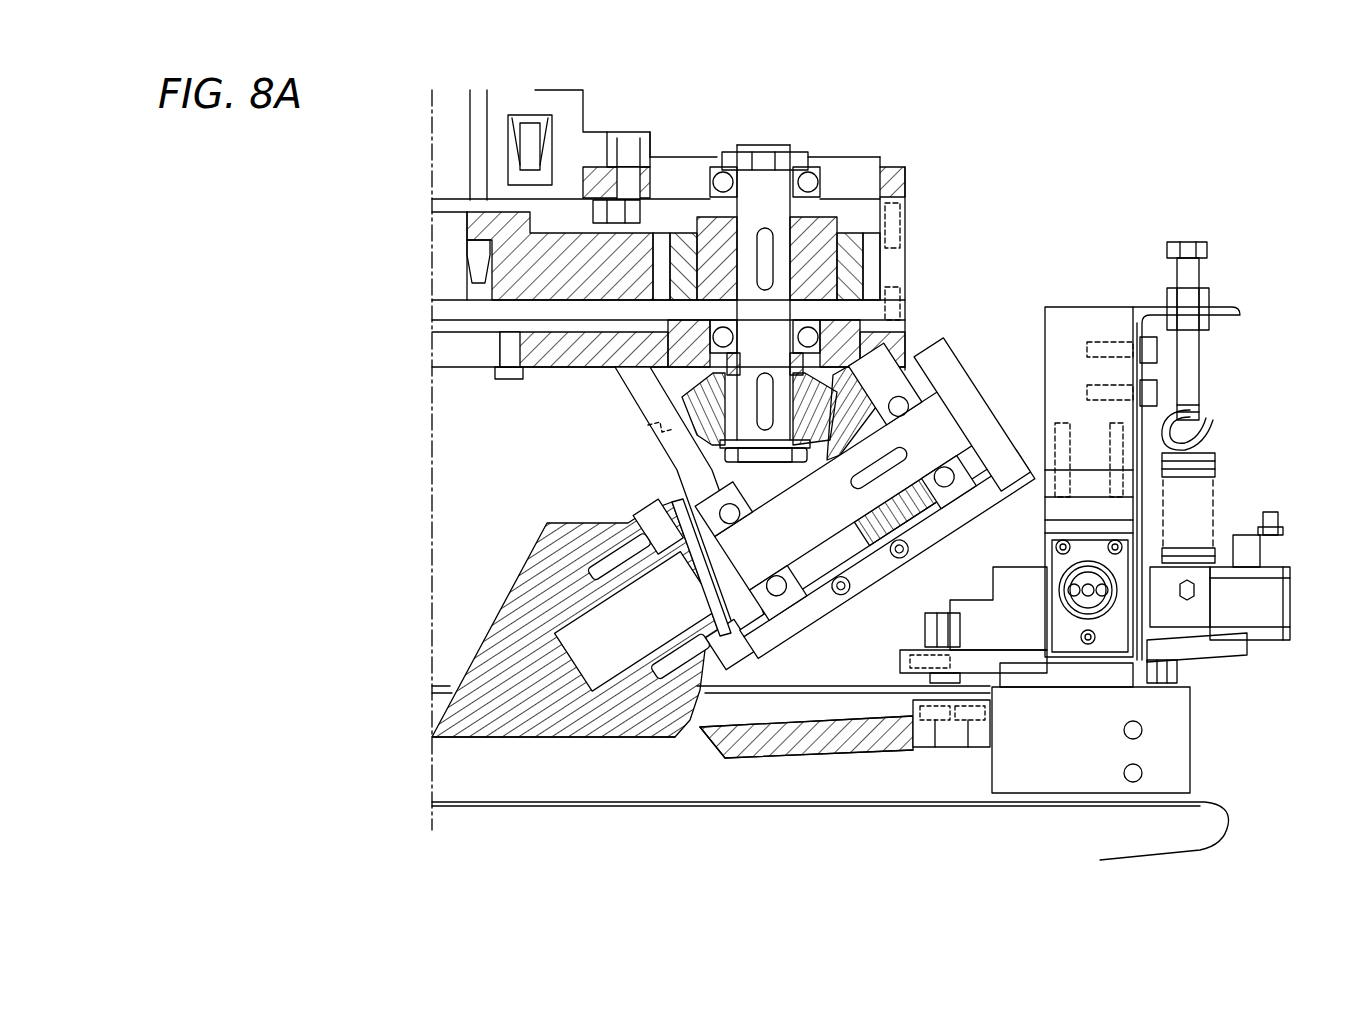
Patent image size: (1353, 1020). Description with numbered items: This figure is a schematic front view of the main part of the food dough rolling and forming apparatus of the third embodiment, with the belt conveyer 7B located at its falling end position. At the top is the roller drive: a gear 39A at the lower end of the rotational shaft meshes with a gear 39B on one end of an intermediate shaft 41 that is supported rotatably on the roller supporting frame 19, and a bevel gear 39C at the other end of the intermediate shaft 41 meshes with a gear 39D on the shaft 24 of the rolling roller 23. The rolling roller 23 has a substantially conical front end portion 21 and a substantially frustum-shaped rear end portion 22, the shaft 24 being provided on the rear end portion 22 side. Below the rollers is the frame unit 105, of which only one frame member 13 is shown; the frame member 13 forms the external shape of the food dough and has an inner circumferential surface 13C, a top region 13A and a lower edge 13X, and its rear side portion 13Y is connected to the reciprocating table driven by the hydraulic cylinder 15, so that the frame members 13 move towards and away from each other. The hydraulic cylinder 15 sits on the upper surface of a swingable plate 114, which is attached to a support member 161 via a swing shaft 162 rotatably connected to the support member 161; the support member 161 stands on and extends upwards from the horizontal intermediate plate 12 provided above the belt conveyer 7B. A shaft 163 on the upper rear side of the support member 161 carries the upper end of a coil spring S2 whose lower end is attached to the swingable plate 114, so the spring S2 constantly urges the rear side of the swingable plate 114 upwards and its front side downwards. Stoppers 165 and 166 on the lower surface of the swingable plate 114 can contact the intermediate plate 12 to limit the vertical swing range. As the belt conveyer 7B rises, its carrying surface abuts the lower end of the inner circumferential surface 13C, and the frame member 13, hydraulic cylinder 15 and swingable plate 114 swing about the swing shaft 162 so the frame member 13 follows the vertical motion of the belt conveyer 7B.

The gear 39A is at (558, 262).
The intermediate shaft 41 is at (782, 190).
The roller supporting frame 19 is at (849, 166).
The frame unit 105 is at (1242, 252).
The support member 161 is at (1097, 330).
The gear 39B is at (850, 262).
The bevel gear 39C is at (875, 343).
The shaft 163 is at (1200, 363).
The shaft 24 is at (913, 433).
The coil spring S2 is at (1215, 466).
The frustum-shaped rear end portion 22 is at (597, 545).
The gear 39D is at (910, 512).
The rolling roller 23 is at (538, 603).
The hydraulic cylinder 15 is at (1270, 600).
The top surface of guide 13A is at (850, 717).
The swingable plate 114 is at (1233, 643).
The stopper 165 is at (1180, 673).
The intermediate plate 12 is at (1160, 752).
The belt conveyer 7B is at (1230, 822).
The conical front end portion 21 is at (565, 740).
The inner circumferential surface 13C is at (720, 760).
The guide lower edge 13X is at (745, 748).
The frame member 13 is at (833, 737).
The rear side portion 13Y is at (927, 730).
The stopper 166 is at (943, 678).
The swing shaft 162 is at (1082, 605).